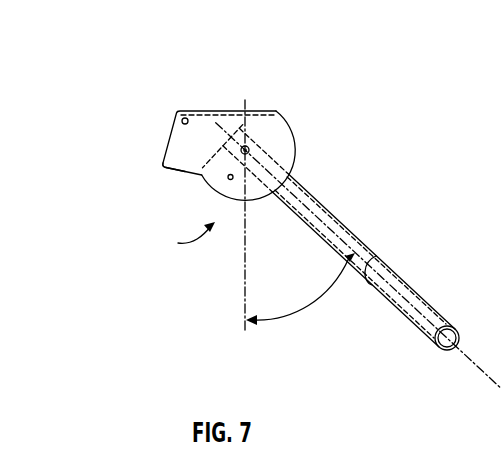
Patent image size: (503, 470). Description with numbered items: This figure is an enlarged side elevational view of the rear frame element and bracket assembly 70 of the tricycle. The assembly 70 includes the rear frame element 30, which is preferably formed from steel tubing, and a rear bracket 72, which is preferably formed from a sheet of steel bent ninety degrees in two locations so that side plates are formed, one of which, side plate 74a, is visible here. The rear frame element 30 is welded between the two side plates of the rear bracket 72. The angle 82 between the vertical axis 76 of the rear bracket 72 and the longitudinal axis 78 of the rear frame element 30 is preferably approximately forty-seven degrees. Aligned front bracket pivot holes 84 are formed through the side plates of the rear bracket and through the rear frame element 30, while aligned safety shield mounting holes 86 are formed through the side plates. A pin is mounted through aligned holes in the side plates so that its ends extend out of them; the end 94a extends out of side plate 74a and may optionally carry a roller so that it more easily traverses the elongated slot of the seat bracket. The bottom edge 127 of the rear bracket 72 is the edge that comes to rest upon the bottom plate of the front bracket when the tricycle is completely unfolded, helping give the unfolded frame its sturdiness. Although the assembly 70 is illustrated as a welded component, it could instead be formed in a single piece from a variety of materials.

The rear frame element and bracket assembly 70 is at (94, 70).
The side plate 74a is at (212, 152).
The end of pin 94a is at (185, 118).
The front bracket pivot hole 84 is at (249, 147).
The safety shield mounting hole 86 is at (228, 177).
The bottom edge 127 is at (167, 171).
The rear frame element 30 is at (332, 212).
The longitudinal axis 78 is at (381, 274).
The rear bracket 72 is at (182, 238).
The vertical axis 76 is at (243, 281).
The angle 82 is at (298, 308).